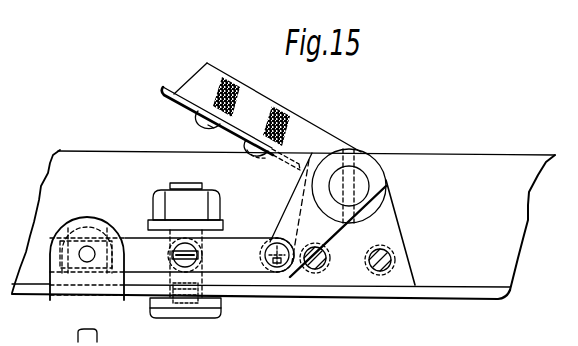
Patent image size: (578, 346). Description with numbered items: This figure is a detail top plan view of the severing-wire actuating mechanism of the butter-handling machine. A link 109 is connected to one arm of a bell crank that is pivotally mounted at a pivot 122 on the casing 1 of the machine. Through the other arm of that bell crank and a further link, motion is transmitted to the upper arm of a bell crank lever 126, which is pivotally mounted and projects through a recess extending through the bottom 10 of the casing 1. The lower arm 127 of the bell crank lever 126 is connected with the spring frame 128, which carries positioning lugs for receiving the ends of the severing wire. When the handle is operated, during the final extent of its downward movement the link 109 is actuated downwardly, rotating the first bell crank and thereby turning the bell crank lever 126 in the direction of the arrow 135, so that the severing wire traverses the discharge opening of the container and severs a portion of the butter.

The casing 1 is at (250, 294).
The bottom of the casing 10 is at (407, 172).
The link 109 is at (88, 337).
The pivot 122 is at (220, 303).
The bell crank lever 126 is at (376, 193).
The lower arm 127 is at (305, 132).
The spring frame 128 is at (181, 90).
The arrow 135 is at (368, 125).